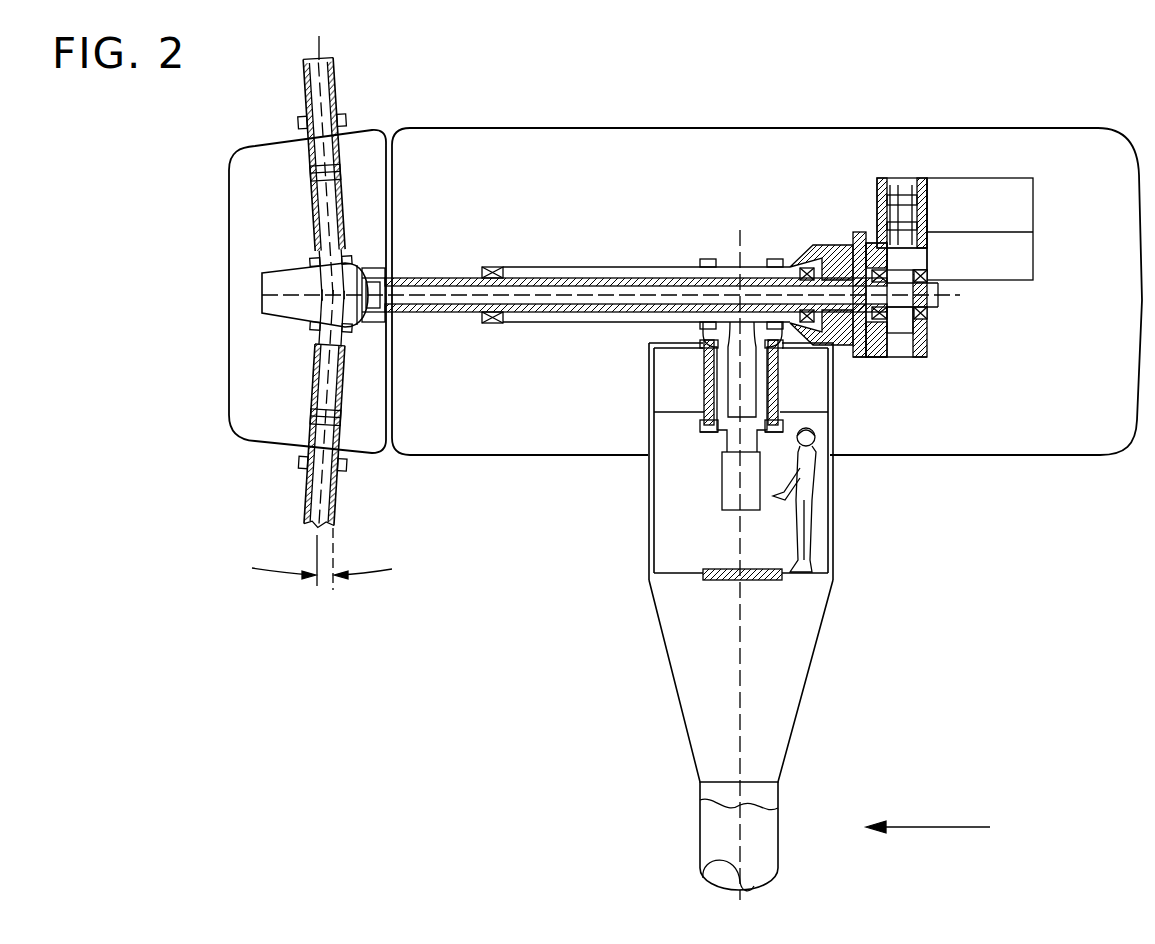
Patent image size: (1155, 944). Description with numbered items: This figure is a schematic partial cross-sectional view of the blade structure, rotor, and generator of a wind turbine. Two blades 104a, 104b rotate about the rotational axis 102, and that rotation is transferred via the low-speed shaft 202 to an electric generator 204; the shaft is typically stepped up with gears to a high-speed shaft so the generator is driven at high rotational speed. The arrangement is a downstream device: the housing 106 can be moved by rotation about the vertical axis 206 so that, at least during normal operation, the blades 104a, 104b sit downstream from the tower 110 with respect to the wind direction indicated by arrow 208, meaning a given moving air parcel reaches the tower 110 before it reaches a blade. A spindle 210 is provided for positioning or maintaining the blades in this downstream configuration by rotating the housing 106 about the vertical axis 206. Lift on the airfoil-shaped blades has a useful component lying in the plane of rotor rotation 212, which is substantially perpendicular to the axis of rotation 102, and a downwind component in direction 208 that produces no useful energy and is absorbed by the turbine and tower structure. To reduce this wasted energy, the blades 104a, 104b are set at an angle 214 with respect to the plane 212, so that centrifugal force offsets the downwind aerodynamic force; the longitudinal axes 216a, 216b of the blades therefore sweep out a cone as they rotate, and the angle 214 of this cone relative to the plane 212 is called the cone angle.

The rotational axis 102 is at (947, 298).
The blade 104a is at (312, 498).
The blade 104b is at (318, 90).
The housing 106 is at (808, 128).
The tower 110 is at (790, 830).
The shaft 202 is at (427, 291).
The electric generator 204 is at (908, 178).
The vertical axis 206 is at (745, 638).
The wind direction arrow 208 is at (928, 827).
The spindle 210 is at (733, 410).
The plane of rotor rotation 212 is at (337, 555).
The cone angle 214 is at (325, 587).
The longitudinal axis of blade 216a is at (315, 545).
The longitudinal axis of blade 216b is at (322, 47).